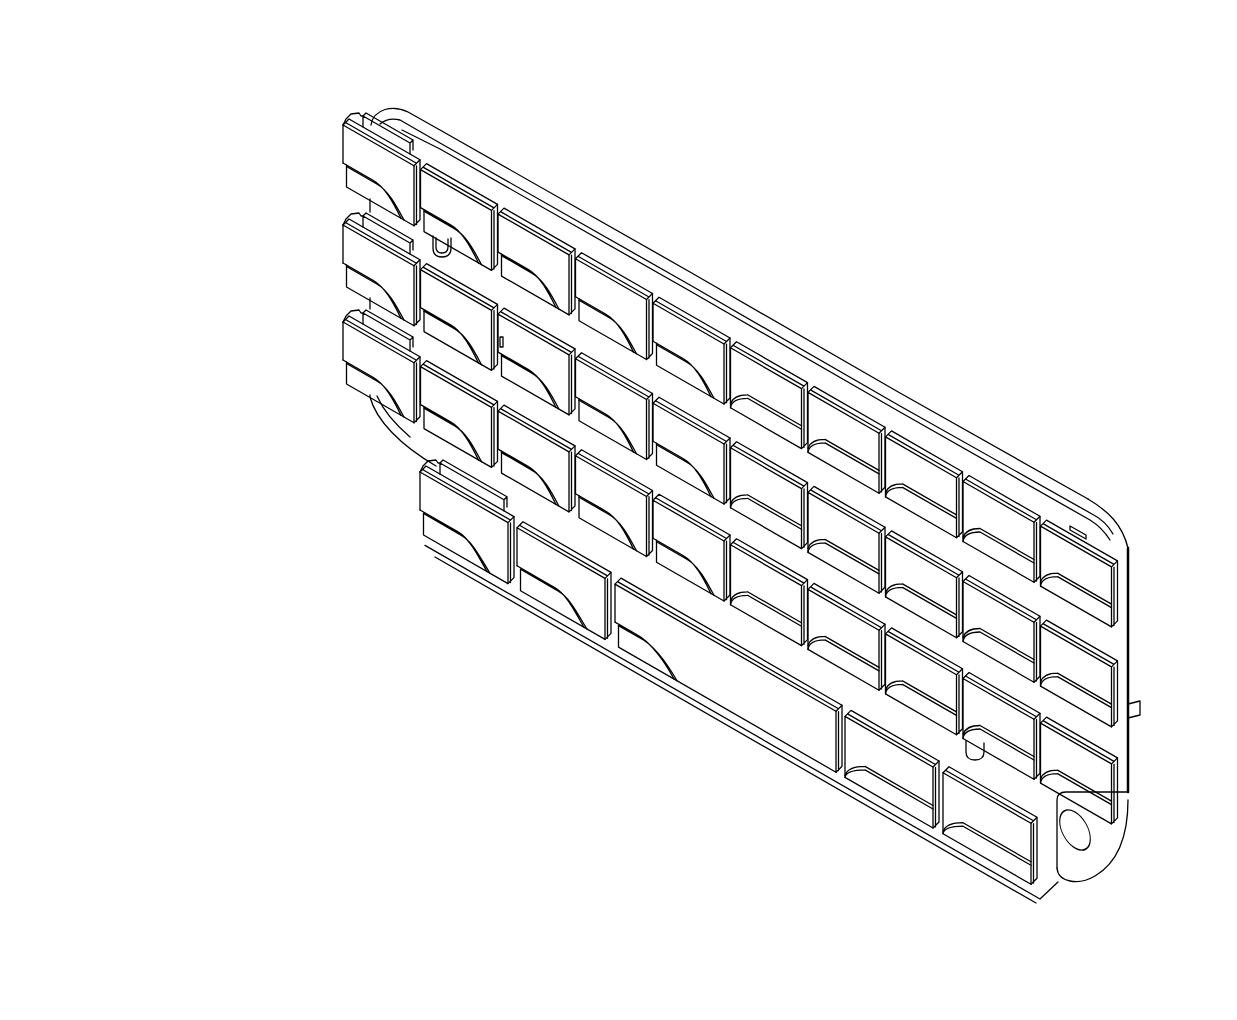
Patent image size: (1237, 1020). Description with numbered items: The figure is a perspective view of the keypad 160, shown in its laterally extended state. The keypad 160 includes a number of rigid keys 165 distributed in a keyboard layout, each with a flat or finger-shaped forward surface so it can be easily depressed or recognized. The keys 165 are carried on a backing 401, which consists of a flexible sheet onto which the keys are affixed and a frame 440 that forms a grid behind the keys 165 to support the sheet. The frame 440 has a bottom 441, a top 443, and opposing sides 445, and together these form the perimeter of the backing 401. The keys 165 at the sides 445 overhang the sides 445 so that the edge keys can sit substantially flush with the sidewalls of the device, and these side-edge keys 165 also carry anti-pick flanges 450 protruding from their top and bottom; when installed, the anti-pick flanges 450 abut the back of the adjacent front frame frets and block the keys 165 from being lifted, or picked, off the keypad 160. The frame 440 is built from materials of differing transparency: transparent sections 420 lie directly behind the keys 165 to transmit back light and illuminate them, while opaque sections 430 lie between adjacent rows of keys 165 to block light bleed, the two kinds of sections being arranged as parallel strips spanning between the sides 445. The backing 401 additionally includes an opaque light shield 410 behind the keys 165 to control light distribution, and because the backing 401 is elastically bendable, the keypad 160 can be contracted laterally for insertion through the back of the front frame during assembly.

The keypad 160 is at (243, 98).
The frame 440 is at (372, 208).
The keys 165 is at (360, 343).
The backing 401 is at (397, 430).
The top 443 is at (850, 373).
The anti-pick flanges 450 is at (1086, 530).
The transparent sections 420 is at (1128, 556).
The opaque sections 430 is at (1128, 638).
The sides 445 is at (1122, 830).
The bottom 441 is at (792, 754).
The opaque light shield 410 is at (1018, 790).